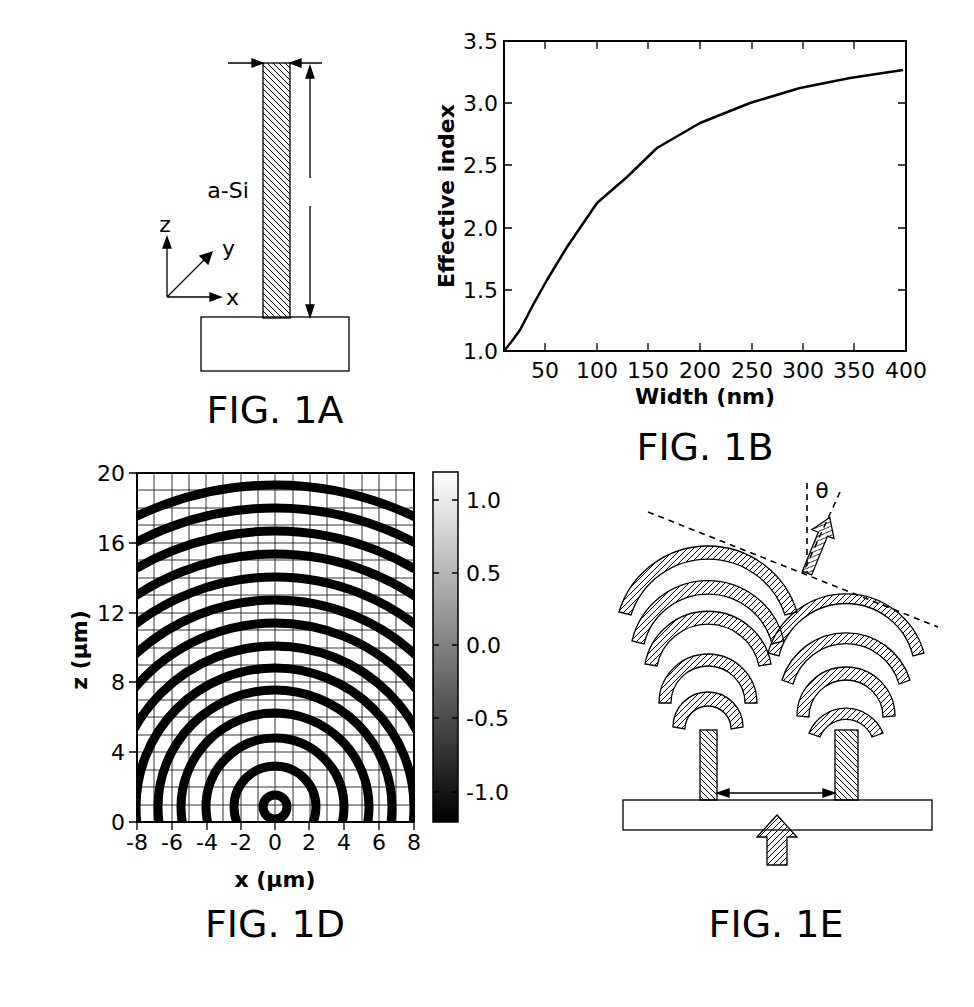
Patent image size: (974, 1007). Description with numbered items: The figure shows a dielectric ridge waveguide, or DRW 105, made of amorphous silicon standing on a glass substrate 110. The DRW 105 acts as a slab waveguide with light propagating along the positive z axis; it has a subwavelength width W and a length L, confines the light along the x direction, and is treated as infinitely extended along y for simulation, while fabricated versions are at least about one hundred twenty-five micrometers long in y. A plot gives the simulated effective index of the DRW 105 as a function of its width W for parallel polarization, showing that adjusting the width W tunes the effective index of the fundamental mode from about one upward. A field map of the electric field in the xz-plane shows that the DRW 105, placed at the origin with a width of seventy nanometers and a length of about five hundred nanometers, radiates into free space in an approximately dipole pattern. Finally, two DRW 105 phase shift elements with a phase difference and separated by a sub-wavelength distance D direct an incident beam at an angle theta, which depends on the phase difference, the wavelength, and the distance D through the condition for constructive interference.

In FIG. 1A, the DRW phase shift element 105 is at (272, 146).
In FIG. 1E, the DRW phase shift element 105 is at (700, 771).
In FIG. 1A, the glass substrate 110 is at (350, 337).
In FIG. 1A, the width W is at (275, 50).
In FIG. 1A, the length L is at (310, 191).
In FIG. 1E, the distance D is at (776, 780).